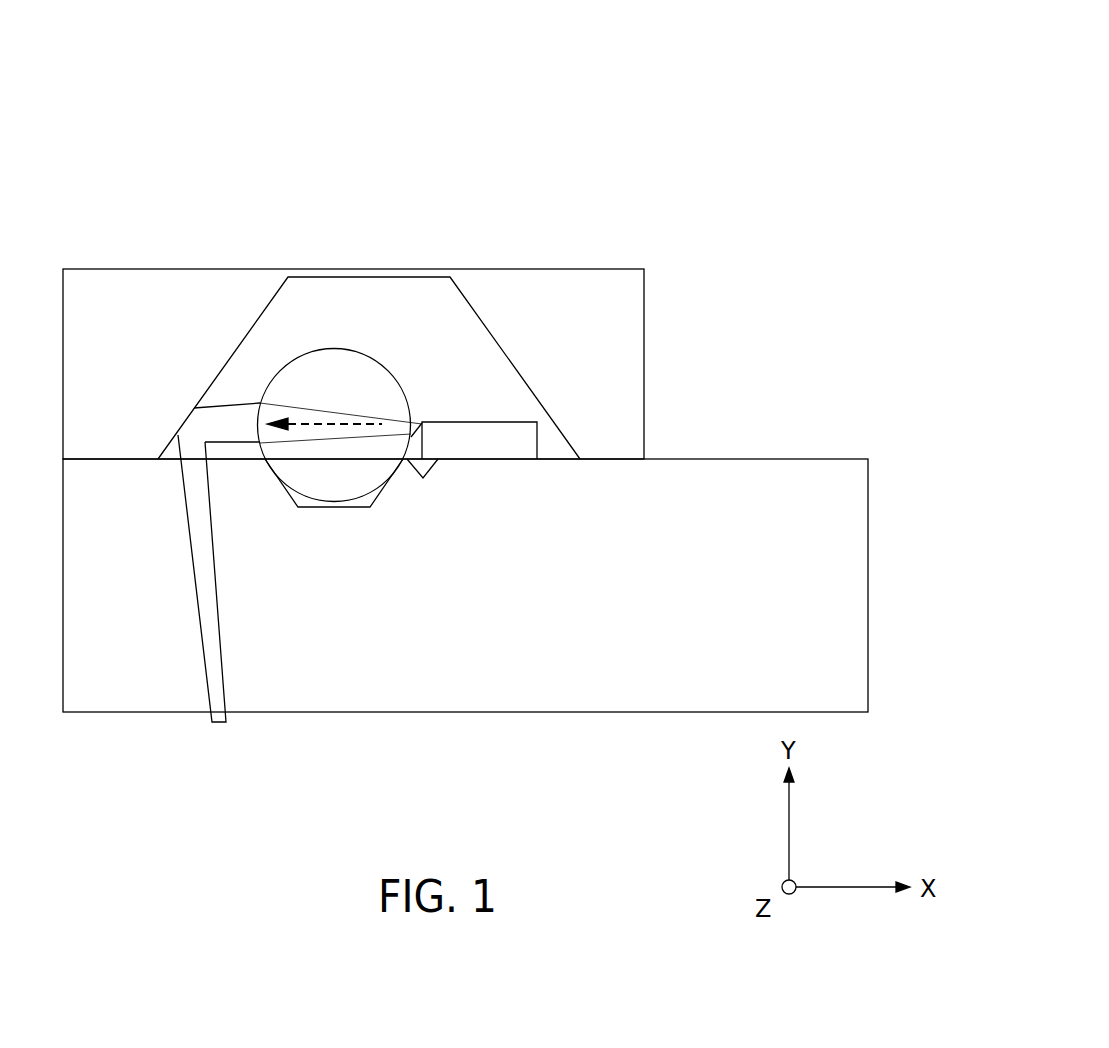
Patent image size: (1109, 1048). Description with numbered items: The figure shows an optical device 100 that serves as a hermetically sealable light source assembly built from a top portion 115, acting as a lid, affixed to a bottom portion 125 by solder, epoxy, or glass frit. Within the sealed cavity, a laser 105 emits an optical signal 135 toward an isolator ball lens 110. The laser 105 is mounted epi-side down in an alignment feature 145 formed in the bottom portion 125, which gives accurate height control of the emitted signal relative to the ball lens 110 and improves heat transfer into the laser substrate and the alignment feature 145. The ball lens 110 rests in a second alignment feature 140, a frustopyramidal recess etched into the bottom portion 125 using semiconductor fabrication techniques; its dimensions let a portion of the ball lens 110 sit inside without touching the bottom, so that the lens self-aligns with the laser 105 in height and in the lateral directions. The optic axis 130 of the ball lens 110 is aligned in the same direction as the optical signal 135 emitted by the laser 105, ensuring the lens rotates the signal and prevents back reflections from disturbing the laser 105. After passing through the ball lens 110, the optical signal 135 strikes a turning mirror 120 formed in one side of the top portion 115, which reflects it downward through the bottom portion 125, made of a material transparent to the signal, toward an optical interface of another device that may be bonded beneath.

The optical device 100 is at (832, 72).
The laser 105 is at (478, 409).
The ball lens 110 is at (334, 337).
The top portion 115 is at (644, 373).
The turning mirror 120 is at (260, 318).
The bottom portion 125 is at (640, 713).
The optic axis 130 is at (317, 427).
The optical signal 135 is at (195, 572).
The alignment feature 140 is at (300, 505).
The alignment feature 145 is at (438, 462).